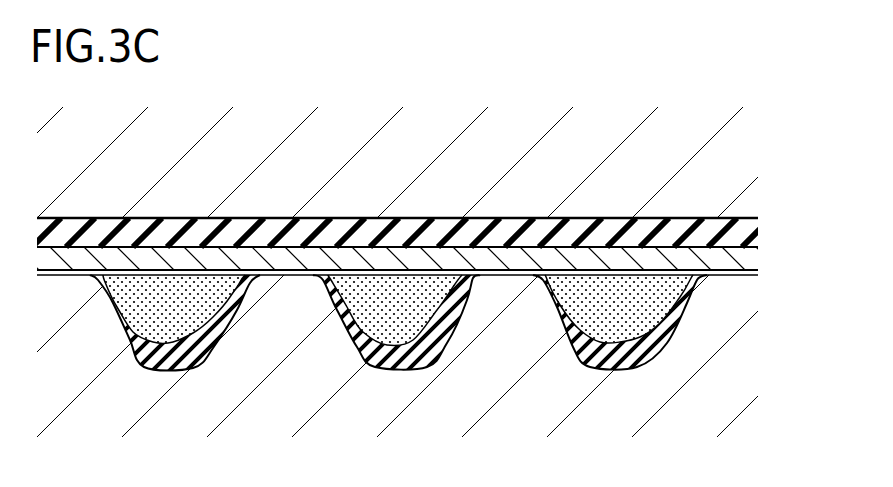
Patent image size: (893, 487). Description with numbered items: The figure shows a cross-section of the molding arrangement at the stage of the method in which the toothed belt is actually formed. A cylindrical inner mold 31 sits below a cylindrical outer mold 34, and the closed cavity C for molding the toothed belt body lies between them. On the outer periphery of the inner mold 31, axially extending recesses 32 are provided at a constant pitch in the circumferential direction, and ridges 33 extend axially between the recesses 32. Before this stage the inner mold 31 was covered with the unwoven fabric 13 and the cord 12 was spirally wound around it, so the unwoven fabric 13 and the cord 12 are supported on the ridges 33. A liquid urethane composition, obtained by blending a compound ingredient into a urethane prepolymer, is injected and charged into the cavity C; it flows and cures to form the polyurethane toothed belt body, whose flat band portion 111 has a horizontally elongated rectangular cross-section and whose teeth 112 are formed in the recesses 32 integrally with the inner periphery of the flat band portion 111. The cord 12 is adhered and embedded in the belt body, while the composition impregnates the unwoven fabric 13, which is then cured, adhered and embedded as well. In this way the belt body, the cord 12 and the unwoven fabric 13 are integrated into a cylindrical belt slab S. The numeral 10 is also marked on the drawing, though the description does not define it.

The laminated sheet 10 is at (178, 228).
The flat band portion 111 is at (108, 234).
The teeth 112 is at (145, 357).
The cord 12 is at (611, 258).
The unwoven fabric 13 is at (613, 318).
The inner mold 31 is at (456, 425).
The recesses 32 is at (173, 360).
The ridges 33 is at (291, 290).
The outer mold 34 is at (422, 153).
The cavity C is at (662, 222).
The belt slab S is at (726, 210).